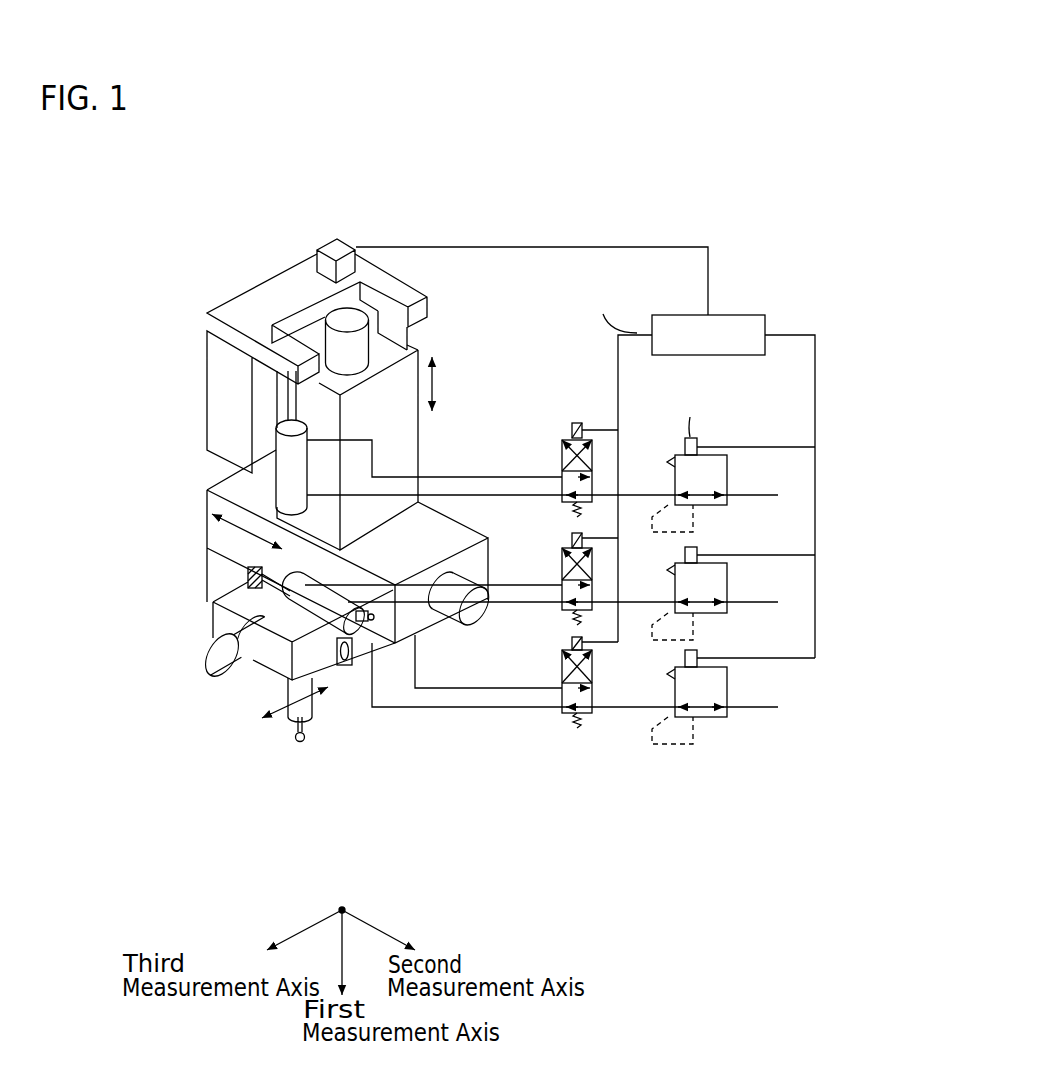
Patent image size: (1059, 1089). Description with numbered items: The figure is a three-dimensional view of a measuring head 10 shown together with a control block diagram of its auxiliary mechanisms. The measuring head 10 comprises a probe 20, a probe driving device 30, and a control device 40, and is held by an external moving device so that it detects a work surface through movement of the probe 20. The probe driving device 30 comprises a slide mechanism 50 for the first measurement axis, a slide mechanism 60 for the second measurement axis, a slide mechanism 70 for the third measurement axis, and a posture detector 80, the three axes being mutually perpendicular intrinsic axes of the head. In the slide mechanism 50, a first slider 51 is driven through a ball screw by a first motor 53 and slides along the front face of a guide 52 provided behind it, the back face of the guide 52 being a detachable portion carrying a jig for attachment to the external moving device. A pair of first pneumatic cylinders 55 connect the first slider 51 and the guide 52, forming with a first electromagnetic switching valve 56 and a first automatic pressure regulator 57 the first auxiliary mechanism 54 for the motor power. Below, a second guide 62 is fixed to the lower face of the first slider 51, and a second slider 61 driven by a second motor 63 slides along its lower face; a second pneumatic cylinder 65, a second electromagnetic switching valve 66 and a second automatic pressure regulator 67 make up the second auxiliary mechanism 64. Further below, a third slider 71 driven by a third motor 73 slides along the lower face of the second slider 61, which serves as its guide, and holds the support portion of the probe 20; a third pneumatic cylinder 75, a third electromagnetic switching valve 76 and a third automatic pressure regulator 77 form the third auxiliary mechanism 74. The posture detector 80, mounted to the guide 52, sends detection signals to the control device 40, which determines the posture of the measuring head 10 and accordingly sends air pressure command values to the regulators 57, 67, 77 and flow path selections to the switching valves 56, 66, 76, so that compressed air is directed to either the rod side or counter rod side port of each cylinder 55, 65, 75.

The measuring head 10 is at (727, 147).
The probe 20 is at (283, 699).
The probe driving device 30 is at (88, 181).
The control device 40 is at (753, 313).
The slide mechanism of the first measurement axis system 50 is at (137, 498).
The first slider 51 is at (317, 412).
The guide 52 is at (243, 302).
The first motor 53 is at (340, 317).
The first auxiliary mechanism 54 is at (532, 431).
The first pneumatic cylinder 55 is at (290, 452).
The first electromagnetic switching valve 56 is at (571, 470).
The first automatic pressure regulator 57 is at (733, 485).
The slide mechanism for the second measurement axis system 60 is at (137, 517).
The second slider 61 is at (248, 582).
The second guide 62 is at (213, 533).
The second motor 63 is at (470, 630).
The second auxiliary mechanism 64 is at (532, 541).
The second pneumatic cylinder 65 is at (313, 600).
The second electromagnetic switching valve 66 is at (571, 579).
The second automatic pressure regulator 67 is at (733, 593).
The slide mechanism for the third measurement axis system 70 is at (333, 668).
The third slider 71 is at (242, 702).
The third motor 73 is at (213, 648).
The third auxiliary mechanism 74 is at (532, 815).
The third pneumatic cylinder 75 is at (350, 668).
The third electromagnetic switching valve 76 is at (571, 682).
The third automatic pressure regulator 77 is at (733, 697).
The posture detector 80 is at (328, 246).